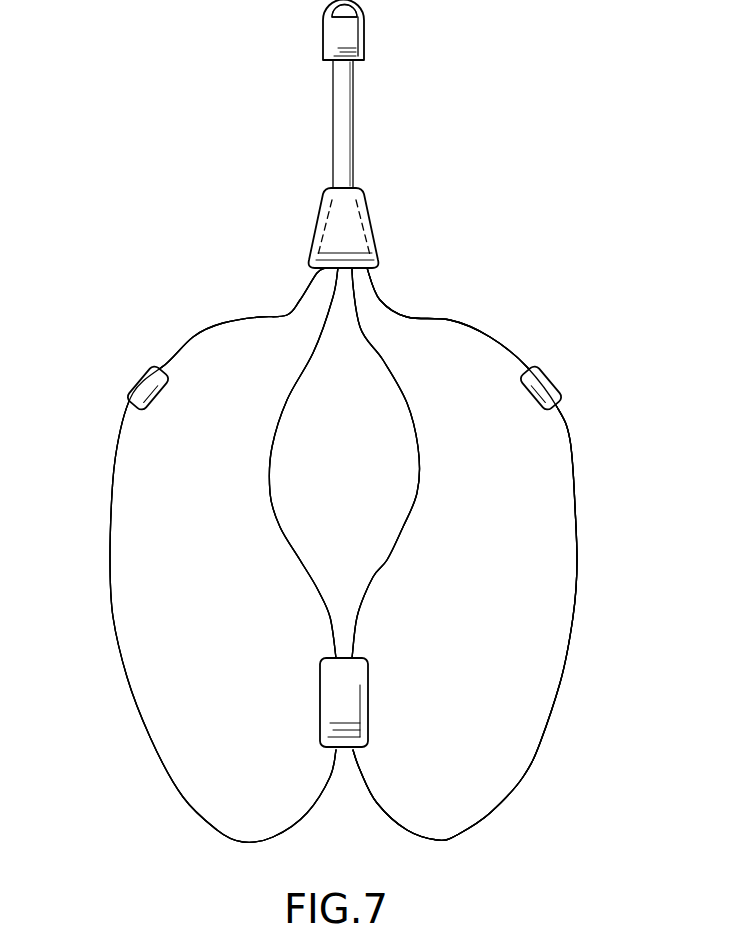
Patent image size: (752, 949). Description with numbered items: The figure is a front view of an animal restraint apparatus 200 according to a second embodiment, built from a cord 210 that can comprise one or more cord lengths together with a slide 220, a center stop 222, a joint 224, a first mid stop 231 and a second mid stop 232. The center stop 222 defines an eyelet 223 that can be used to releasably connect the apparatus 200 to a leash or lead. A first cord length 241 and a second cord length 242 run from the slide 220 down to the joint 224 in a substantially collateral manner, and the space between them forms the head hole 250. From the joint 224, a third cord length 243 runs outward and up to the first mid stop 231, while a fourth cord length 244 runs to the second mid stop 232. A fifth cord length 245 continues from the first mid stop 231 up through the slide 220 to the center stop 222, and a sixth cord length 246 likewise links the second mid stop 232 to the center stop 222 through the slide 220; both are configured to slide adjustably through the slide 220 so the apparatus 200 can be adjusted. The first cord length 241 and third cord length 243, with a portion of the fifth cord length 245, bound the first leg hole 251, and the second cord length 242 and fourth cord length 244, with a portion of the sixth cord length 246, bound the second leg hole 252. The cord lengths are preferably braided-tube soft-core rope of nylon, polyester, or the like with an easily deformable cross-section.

The animal restraint apparatus 200 is at (601, 163).
The cord 210 is at (525, 772).
The slide 220 is at (373, 221).
The center stop 222 is at (366, 34).
The eyelet 223 is at (318, 3).
The joint 224 is at (320, 698).
The first mid stop 231 is at (558, 378).
The second mid stop 232 is at (133, 377).
The first cord length 241 is at (418, 452).
The second cord length 242 is at (273, 513).
The third cord length 243 is at (577, 560).
The fourth cord length 244 is at (127, 677).
The fifth cord length 245 is at (354, 122).
The sixth cord length 246 is at (333, 113).
The head hole 250 is at (370, 472).
The first leg hole 251 is at (487, 696).
The second leg hole 252 is at (243, 657).